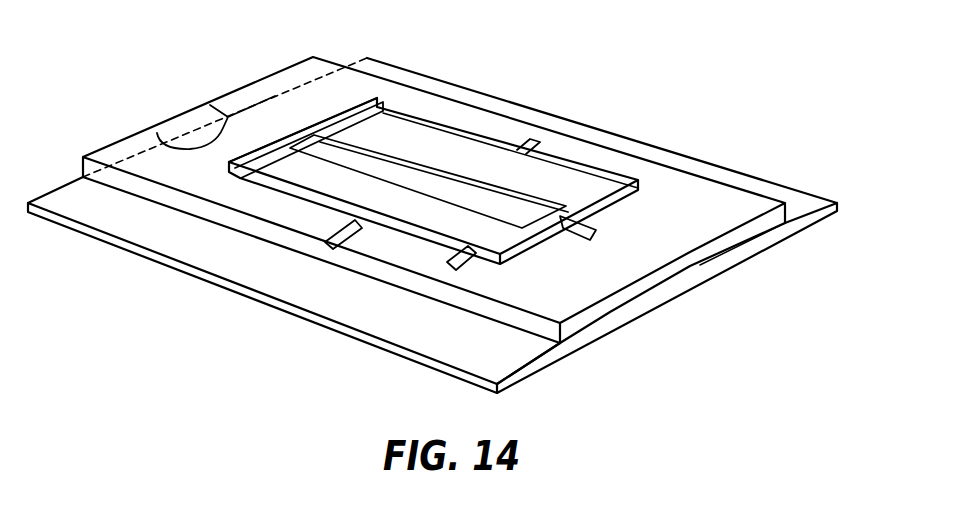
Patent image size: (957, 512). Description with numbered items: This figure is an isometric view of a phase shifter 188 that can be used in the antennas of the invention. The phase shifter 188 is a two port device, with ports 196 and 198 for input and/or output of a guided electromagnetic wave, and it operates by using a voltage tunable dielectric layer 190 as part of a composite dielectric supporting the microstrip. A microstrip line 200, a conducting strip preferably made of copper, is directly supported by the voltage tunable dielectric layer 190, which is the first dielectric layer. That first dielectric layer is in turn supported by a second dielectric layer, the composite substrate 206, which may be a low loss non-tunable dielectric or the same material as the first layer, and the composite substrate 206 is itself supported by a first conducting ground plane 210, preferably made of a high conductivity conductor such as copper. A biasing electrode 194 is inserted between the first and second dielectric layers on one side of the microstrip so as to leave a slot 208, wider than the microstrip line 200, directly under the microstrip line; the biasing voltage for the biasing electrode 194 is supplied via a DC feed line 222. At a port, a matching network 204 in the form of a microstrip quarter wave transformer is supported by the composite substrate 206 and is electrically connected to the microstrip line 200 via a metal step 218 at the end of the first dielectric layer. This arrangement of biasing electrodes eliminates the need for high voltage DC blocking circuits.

The phase shifter 188 is at (633, 97).
The voltage tunable dielectric layer 190 is at (621, 197).
The biasing electrode 194 is at (460, 257).
The port 196 is at (208, 117).
The port 198 is at (623, 246).
The microstrip line 200 is at (303, 128).
The matching network 204 is at (608, 246).
The composite substrate 206 is at (180, 138).
The slot 208 is at (520, 227).
The first conducting ground plane 210 is at (800, 198).
The metal step 218 is at (608, 243).
The DC feed line 222 is at (353, 240).